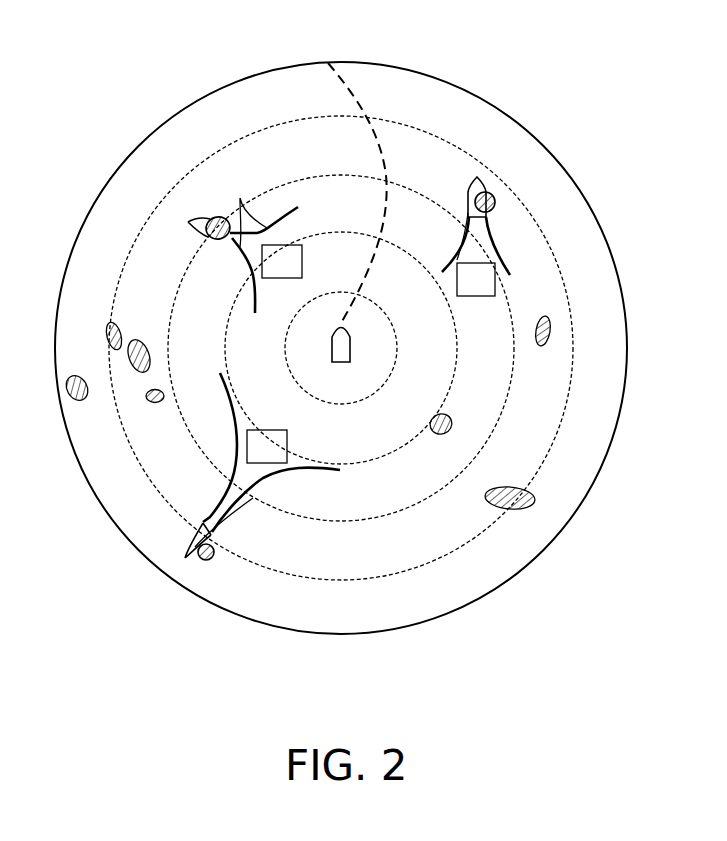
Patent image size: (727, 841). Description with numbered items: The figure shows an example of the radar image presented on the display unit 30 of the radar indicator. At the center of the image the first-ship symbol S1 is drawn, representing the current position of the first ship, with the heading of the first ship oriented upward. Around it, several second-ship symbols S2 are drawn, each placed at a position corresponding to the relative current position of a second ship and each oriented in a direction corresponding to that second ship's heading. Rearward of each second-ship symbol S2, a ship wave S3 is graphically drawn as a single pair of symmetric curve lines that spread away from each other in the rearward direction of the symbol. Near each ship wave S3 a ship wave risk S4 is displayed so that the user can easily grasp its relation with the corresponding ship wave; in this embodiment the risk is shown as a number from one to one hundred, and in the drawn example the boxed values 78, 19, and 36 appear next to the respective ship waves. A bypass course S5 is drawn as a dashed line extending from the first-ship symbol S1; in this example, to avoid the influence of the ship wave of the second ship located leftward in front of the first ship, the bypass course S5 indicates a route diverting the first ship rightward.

The display unit 30 is at (191, 649).
The first-ship symbol S1 is at (345, 362).
The second-ship symbol S2 is at (188, 229).
The ship wave S3 is at (241, 198).
The ship wave risk S4 is at (297, 245).
The bypass course S5 is at (360, 97).
The target identification number 78 is at (282, 261).
The target identification number 19 is at (476, 279).
The target identification number 36 is at (267, 446).